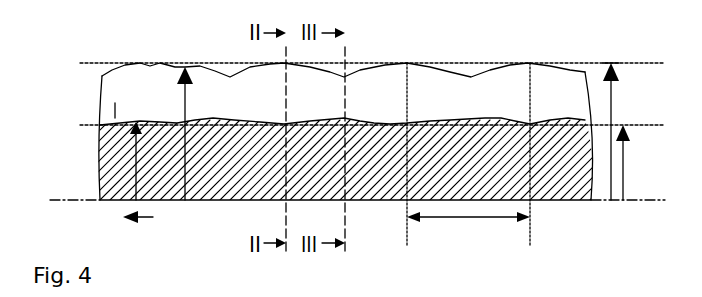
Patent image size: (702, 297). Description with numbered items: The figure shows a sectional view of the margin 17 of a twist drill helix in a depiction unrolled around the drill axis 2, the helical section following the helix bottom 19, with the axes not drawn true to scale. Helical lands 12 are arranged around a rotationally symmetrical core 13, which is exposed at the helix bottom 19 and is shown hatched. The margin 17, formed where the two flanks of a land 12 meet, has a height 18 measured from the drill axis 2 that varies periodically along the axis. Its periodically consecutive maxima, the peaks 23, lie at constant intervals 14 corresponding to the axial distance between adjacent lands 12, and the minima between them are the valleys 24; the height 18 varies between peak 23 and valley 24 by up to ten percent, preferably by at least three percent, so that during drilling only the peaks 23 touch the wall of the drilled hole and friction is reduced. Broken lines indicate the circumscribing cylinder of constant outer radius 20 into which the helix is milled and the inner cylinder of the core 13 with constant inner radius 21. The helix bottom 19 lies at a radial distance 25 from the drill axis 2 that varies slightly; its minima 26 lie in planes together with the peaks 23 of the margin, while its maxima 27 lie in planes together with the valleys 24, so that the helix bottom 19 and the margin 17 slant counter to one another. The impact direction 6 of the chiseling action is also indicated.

The drill axis 2 is at (88, 200).
The impact direction 6 is at (153, 217).
The helical land 12 is at (130, 83).
The core 13 is at (117, 147).
The axial distance 14 is at (455, 217).
The margin 17 is at (136, 67).
The height 18 is at (182, 110).
The helix bottom 19 is at (113, 116).
The outer radius 20 is at (611, 105).
The inner radius 21 is at (623, 155).
The peak 23 is at (407, 63).
The valley 24 is at (345, 77).
The radial distance 25 is at (135, 182).
The minimum 26 is at (530, 124).
The maximum 27 is at (467, 119).